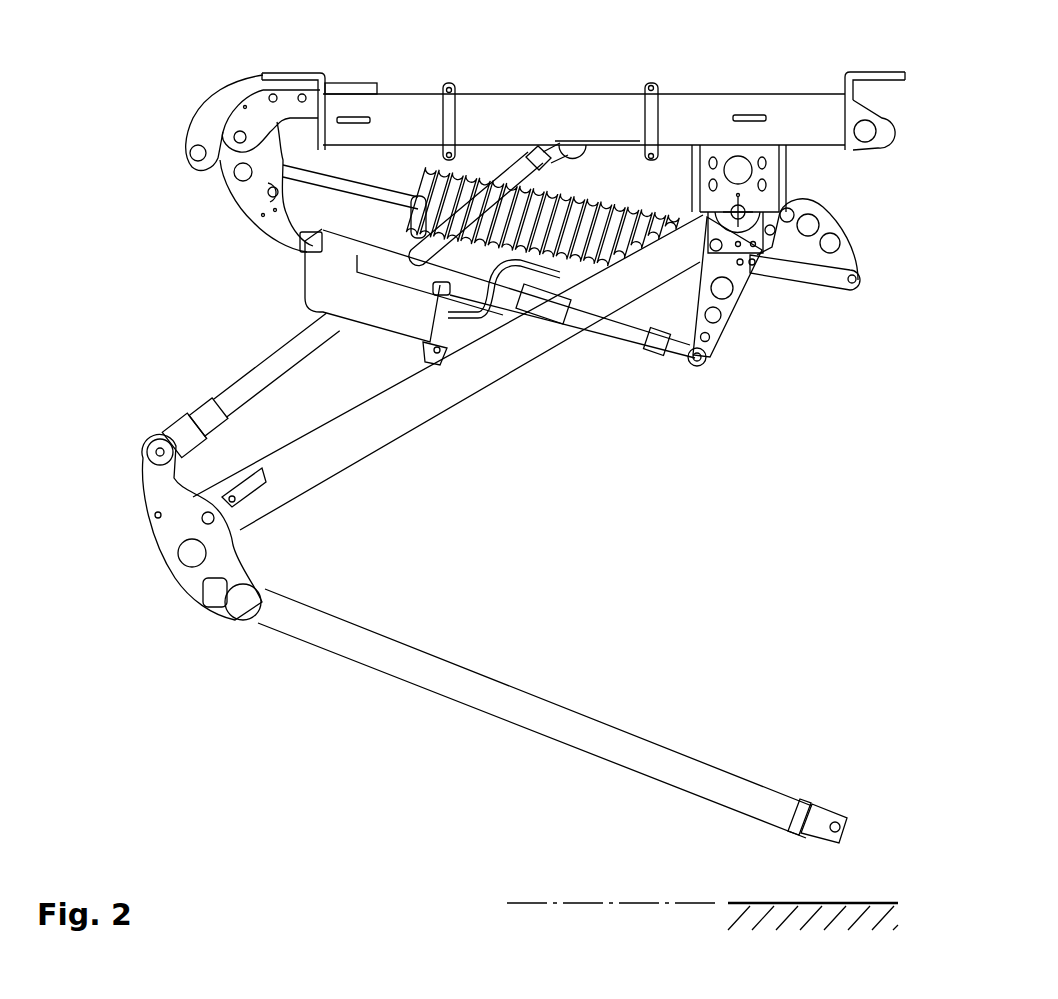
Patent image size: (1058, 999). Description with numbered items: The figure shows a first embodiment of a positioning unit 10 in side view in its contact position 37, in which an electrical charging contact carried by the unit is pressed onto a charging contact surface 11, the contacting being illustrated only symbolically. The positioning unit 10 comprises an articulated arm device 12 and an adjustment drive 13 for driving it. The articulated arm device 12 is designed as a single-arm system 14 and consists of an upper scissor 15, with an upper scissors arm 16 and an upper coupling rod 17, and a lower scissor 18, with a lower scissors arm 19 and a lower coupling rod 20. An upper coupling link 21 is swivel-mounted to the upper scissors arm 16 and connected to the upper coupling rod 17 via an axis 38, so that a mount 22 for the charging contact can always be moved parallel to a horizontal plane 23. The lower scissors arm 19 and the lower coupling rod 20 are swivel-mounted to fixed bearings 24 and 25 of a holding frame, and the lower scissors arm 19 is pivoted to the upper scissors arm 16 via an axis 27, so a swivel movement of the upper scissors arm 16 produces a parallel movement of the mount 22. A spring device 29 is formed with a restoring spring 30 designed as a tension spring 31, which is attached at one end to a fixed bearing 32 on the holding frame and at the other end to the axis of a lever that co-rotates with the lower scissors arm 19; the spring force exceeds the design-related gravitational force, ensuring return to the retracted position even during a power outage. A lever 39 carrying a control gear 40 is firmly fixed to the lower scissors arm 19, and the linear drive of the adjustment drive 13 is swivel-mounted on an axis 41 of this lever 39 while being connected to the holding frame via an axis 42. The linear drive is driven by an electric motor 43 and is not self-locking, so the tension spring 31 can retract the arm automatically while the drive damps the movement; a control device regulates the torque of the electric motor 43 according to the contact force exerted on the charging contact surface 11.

The positioning unit 10 is at (180, 155).
The charging contact surface 11 is at (719, 883).
The articulated arm device 12 is at (197, 499).
The adjustment drive 13 is at (451, 331).
The single-arm system 14 is at (776, 336).
The upper scissor 15 is at (448, 372).
The upper scissors arm 16 is at (404, 425).
The upper coupling rod 17 is at (263, 373).
The lower scissor 18 is at (585, 716).
The lower scissors arm 19 is at (488, 703).
The lower coupling rod 20 is at (198, 527).
The upper coupling link 21 is at (152, 583).
The mount 22 is at (848, 800).
The horizontal plane 23 is at (758, 880).
The fixed bearing 24 is at (575, 143).
The fixed bearing 25 is at (745, 210).
The axis 27 is at (213, 523).
The spring device 29 is at (670, 172).
The restoring spring 30 is at (500, 160).
The tension spring 31 is at (467, 188).
The claw plate 32 is at (220, 162).
The contact position 37 is at (205, 100).
The axis 38 is at (160, 449).
The lever 39 is at (730, 313).
The control gear 40 is at (748, 348).
The axis 41 is at (300, 243).
The axis 42 is at (697, 358).
The electric motor 43 is at (384, 313).